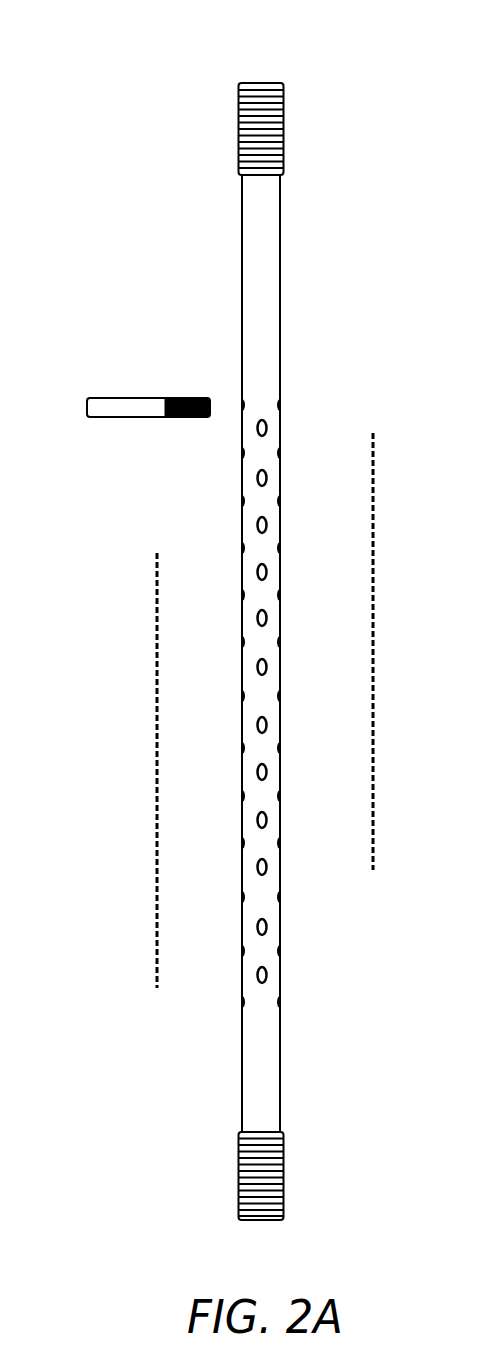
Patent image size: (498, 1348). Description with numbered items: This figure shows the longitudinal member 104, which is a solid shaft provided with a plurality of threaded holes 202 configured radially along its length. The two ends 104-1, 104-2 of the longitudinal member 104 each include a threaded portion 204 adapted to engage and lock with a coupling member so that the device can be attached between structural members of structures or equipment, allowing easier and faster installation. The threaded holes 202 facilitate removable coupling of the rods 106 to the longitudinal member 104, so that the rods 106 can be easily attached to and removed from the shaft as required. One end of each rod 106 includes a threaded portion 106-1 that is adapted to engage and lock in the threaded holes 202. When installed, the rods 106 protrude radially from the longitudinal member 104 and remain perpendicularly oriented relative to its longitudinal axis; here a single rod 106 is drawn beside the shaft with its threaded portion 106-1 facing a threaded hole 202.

The longitudinal member 104 is at (126, 54).
The first end of the longitudinal member 104-1 is at (265, 82).
The second end of the longitudinal member 104-2 is at (255, 1222).
The threaded portion 204 is at (241, 146).
The threaded holes 202 is at (280, 405).
The rod 106 is at (126, 411).
The threaded portion of the rod 106-1 is at (190, 396).